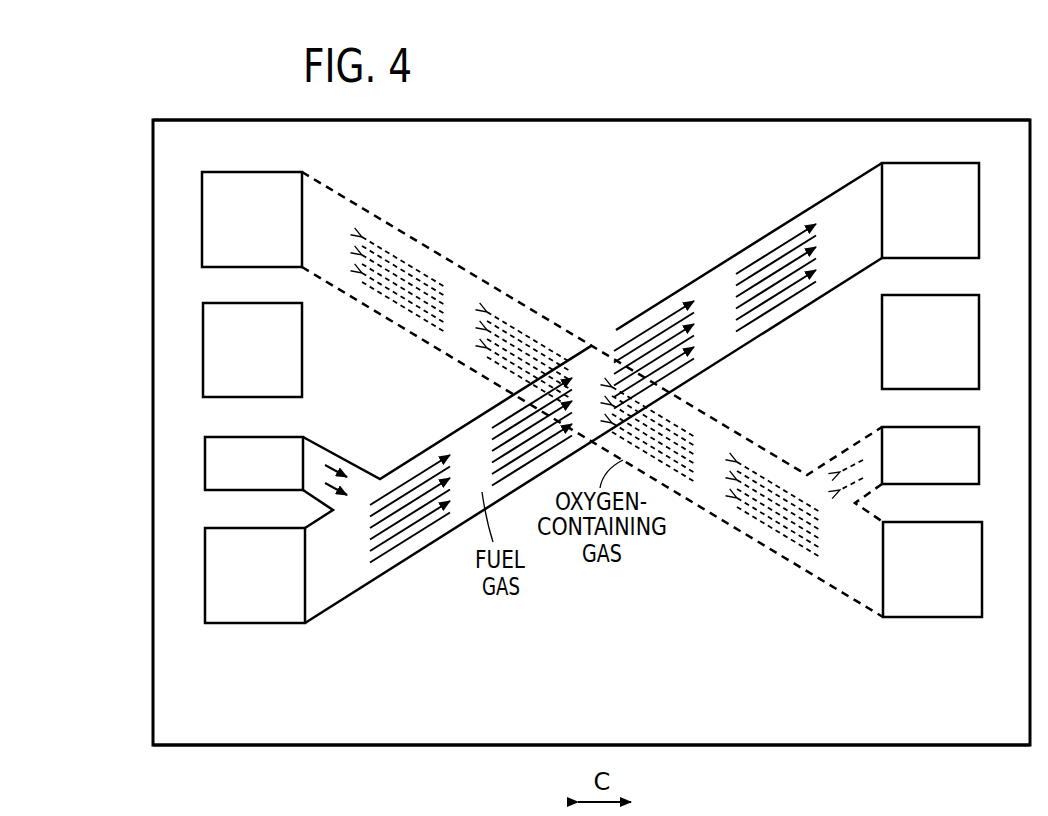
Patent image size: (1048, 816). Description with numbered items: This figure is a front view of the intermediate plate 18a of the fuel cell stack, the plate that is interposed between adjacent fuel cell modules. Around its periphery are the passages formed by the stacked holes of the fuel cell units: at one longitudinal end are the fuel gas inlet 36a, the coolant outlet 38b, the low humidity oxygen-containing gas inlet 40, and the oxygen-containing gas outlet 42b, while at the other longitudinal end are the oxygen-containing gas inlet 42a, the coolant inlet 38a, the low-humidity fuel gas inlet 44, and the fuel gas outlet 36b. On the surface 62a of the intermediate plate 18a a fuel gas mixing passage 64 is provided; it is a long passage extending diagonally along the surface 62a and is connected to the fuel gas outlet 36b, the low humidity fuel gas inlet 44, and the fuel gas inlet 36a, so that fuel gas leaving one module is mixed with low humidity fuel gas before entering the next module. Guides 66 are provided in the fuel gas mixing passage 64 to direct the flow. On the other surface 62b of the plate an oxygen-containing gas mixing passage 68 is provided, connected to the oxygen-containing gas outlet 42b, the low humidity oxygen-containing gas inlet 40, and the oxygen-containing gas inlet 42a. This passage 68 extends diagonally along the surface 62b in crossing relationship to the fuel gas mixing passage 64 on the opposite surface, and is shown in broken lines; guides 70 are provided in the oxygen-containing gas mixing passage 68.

The intermediate plate 18a is at (915, 93).
The fuel gas inlet 36a is at (930, 210).
The fuel gas outlet 36b is at (255, 575).
The coolant inlet 38a is at (252, 350).
The coolant outlet 38b is at (930, 342).
The low humidity oxygen-containing gas inlet 40 is at (930, 455).
The oxygen-containing gas inlet 42a is at (252, 219).
The oxygen-containing gas outlet 42b is at (932, 569).
The low-humidity fuel gas inlet 44 is at (254, 463).
The surface 62a is at (707, 133).
The other surface 62b is at (853, 745).
The fuel gas mixing passage 64 is at (713, 272).
The guides 66 is at (405, 478).
The oxygen-containing gas mixing passage 68 is at (714, 516).
The guides 70 is at (433, 255).